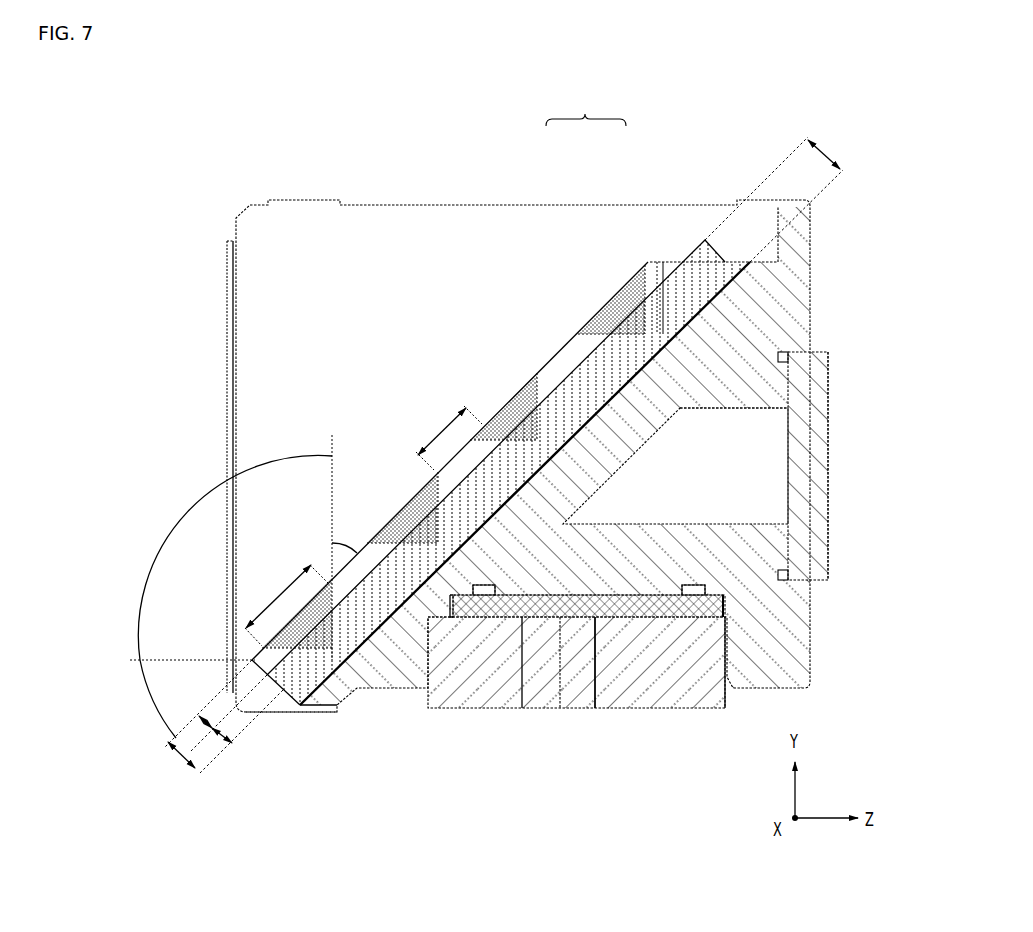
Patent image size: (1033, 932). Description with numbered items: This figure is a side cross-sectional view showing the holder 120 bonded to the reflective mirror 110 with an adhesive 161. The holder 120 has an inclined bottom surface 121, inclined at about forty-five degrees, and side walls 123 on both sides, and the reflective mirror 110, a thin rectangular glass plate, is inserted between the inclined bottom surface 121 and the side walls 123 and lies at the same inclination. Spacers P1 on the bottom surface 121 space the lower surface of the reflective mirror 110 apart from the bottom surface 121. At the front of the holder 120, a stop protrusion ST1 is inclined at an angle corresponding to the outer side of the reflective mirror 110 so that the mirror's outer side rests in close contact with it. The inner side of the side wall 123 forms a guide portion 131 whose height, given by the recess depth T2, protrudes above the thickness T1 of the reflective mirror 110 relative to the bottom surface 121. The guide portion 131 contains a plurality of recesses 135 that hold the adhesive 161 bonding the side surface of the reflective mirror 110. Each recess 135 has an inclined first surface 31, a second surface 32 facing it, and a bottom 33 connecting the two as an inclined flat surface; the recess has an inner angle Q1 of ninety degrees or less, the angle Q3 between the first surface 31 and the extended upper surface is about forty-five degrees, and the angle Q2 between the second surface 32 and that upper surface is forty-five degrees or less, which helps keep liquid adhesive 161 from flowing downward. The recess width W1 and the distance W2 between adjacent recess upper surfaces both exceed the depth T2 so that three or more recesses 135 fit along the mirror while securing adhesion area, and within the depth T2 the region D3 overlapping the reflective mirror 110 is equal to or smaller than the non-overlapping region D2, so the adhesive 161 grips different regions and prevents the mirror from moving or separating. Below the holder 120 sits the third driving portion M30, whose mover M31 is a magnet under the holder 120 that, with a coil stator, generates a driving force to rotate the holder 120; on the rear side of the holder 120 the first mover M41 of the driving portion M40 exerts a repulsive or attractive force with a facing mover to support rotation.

The holder 120 is at (214, 357).
The side wall 123 is at (233, 281).
The reflective mirror 110 is at (686, 278).
The adhesive 161 is at (540, 425).
The first recesses 135 is at (586, 107).
The bottom 33 is at (592, 334).
The second surface 32 is at (641, 336).
The first surface 31 is at (650, 330).
The thickness of the reflective mirror T1 is at (774, 198).
The spacer P1 is at (707, 310).
The fourth driving portion M40 is at (848, 391).
The first mover M41 is at (822, 521).
The inclined bottom surface 121 is at (592, 430).
The inner angle of the recess Q1 is at (231, 547).
The angle of the second surface Q2 is at (153, 699).
The angle of the first surface Q3 is at (348, 534).
The width of the recess W1 is at (288, 606).
The distance between recess upper surfaces W2 is at (452, 458).
The non-overlapping region D2 is at (216, 706).
The overlapping region D3 is at (241, 731).
The depth of the recess T2 is at (178, 760).
The stop protrusion ST1 is at (283, 704).
The first guide portion 131 is at (465, 462).
The third driving portion M30 is at (582, 730).
The mover M31 is at (660, 673).